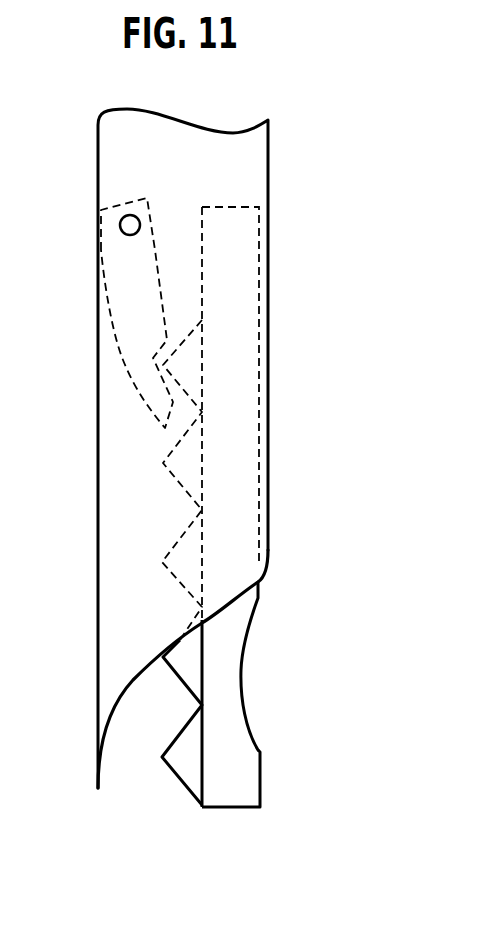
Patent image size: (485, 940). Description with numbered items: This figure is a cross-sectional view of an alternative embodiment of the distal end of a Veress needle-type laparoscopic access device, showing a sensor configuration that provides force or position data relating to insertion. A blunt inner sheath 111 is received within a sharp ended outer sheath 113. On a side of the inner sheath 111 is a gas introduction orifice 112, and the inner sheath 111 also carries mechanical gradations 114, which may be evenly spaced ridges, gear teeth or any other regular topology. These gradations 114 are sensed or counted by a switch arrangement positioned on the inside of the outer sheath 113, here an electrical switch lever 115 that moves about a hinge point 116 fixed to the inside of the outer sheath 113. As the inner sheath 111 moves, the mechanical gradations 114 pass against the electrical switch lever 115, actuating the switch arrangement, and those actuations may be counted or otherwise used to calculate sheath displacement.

The blunt inner sheath 111 is at (270, 767).
The gas introduction orifice 112 is at (265, 656).
The sharp ended outer sheath 113 is at (121, 635).
The mechanical gradations 114 is at (150, 561).
The electrical switch lever 115 is at (108, 312).
The hinge point 116 is at (105, 223).